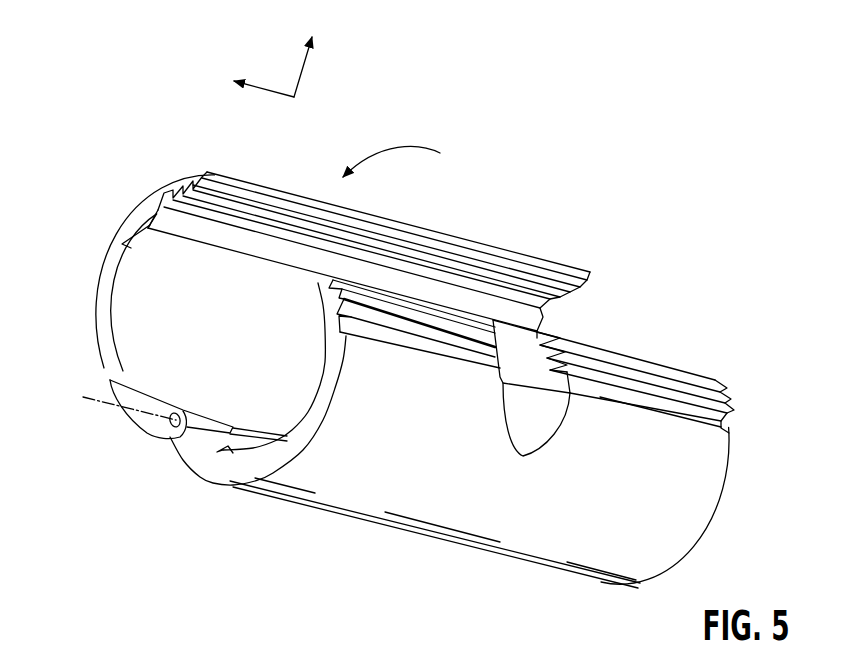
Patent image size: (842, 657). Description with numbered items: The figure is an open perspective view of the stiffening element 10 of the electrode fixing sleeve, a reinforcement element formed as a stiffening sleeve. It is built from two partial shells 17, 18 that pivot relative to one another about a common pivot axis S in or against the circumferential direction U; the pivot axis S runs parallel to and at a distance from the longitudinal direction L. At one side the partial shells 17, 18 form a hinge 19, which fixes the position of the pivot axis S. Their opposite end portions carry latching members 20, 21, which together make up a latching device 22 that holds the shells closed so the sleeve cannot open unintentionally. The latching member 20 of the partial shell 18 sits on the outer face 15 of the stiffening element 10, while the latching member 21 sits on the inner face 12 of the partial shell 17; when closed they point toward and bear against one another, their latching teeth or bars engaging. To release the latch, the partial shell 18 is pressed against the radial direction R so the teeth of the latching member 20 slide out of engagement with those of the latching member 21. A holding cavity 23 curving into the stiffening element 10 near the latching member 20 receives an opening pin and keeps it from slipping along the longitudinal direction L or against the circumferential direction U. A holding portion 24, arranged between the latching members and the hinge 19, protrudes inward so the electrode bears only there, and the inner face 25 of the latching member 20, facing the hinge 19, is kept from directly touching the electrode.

The stiffening element 10 is at (490, 141).
The inner face 12 is at (148, 272).
The outer face 15 is at (450, 498).
The partial shell 17 is at (155, 205).
The partial shell 18 is at (280, 458).
The hinge 19 is at (151, 453).
The latching member 20 is at (733, 397).
The latching member 21 is at (578, 304).
The latching device 22 is at (684, 218).
The holding cavity 23 is at (532, 433).
The holding portion 24 is at (239, 332).
The inner face 25 is at (321, 327).
The pivot axis S is at (96, 400).
The circumferential direction U is at (394, 144).
The longitudinal direction L is at (263, 88).
The radial direction R is at (302, 62).